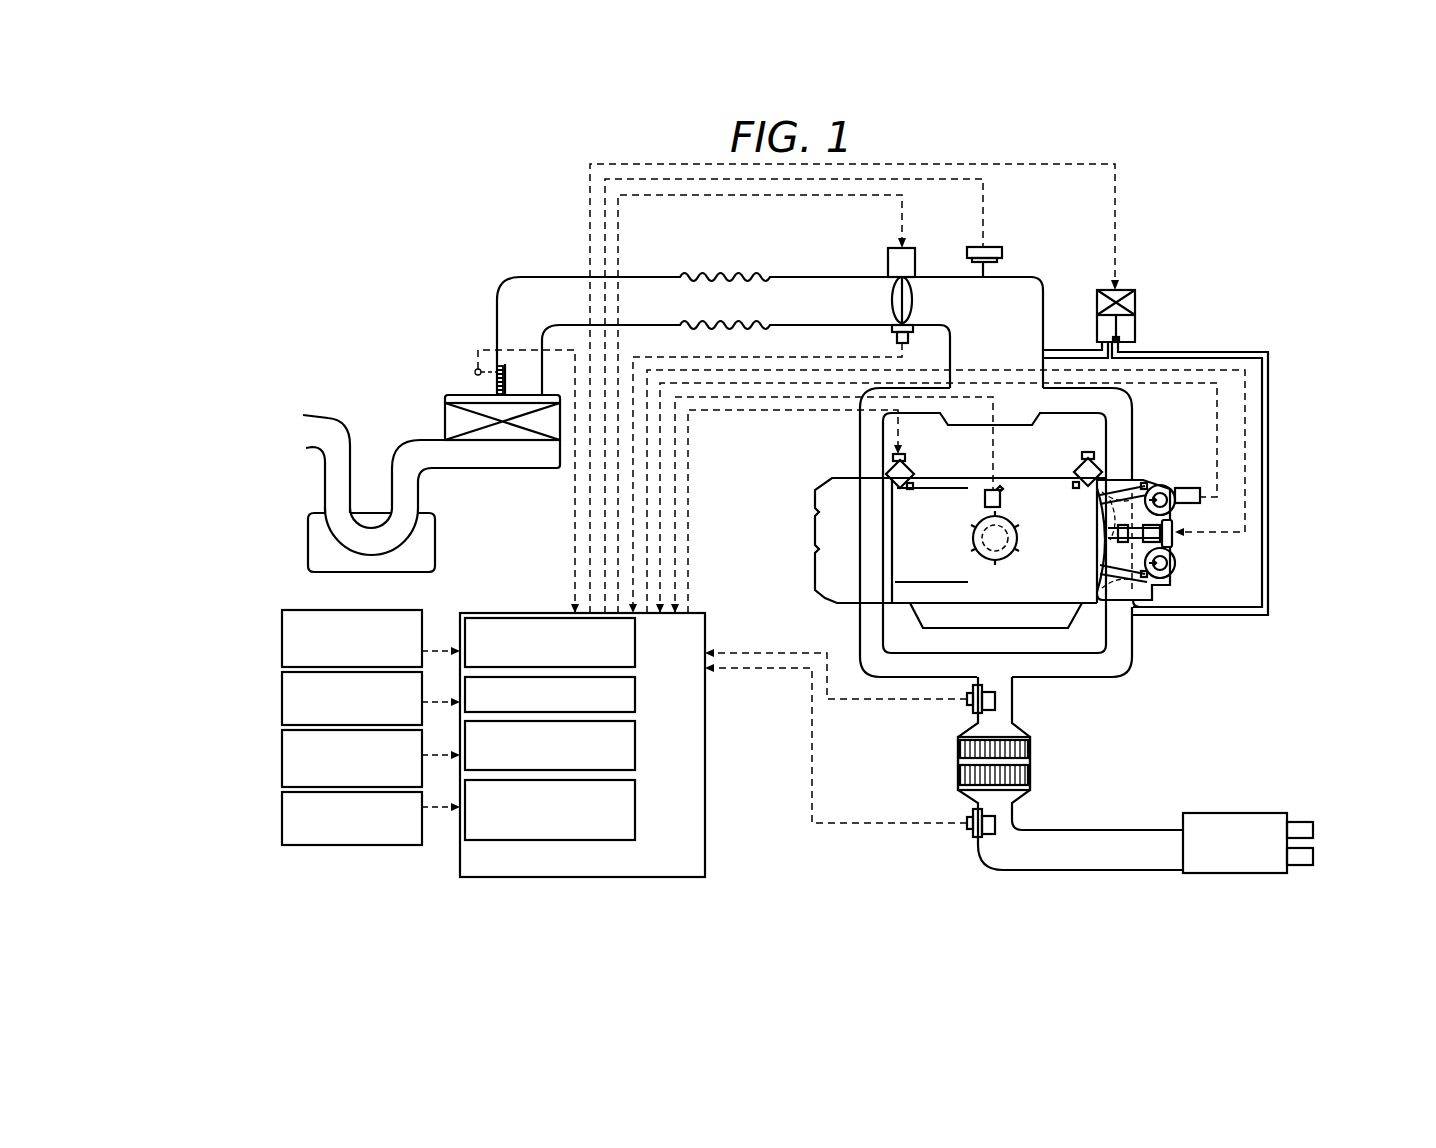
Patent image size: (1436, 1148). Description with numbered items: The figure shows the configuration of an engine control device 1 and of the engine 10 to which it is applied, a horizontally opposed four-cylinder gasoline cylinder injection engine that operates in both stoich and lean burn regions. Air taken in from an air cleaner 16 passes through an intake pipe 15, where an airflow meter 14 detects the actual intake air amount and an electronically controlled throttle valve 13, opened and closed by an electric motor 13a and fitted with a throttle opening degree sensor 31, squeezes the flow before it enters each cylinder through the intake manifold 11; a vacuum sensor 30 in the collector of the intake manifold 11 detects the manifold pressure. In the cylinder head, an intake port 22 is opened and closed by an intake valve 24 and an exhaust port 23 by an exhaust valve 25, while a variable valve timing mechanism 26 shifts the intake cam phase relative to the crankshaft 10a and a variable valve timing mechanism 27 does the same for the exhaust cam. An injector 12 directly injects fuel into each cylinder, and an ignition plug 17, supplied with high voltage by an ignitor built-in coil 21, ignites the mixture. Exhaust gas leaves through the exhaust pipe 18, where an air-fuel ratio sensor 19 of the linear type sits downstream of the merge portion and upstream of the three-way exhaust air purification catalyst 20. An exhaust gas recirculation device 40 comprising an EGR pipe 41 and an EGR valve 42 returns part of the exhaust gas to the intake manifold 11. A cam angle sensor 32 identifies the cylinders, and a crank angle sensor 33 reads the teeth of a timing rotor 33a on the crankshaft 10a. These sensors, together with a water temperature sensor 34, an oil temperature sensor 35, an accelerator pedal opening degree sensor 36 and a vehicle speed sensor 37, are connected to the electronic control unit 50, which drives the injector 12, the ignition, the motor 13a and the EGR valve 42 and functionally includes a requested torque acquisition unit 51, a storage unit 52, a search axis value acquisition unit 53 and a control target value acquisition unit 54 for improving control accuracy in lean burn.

The engine control device 1 is at (742, 545).
The engine 10 is at (1008, 593).
The crankshaft 10a is at (975, 550).
The intake manifold 11 is at (858, 449).
The injector 12 is at (906, 465).
The electronically controlled throttle valve 13 is at (892, 295).
The electric motor 13a is at (888, 258).
The airflow meter 14 is at (475, 373).
The intake pipe 15 is at (790, 276).
The air cleaner 16 is at (443, 419).
The ignition plug 17 is at (1103, 542).
The exhaust pipe 18 is at (865, 644).
The air-fuel ratio sensor 19 is at (964, 707).
The exhaust air purification catalyst 20 is at (1033, 769).
The ignitor built-in coil 21 is at (1180, 539).
The intake port 22 is at (1094, 480).
The exhaust port 23 is at (1146, 594).
The intake valve 24 is at (1101, 533).
The exhaust valve 25 is at (1094, 572).
The variable valve timing mechanism 26 is at (1158, 486).
The variable valve timing mechanism 27 is at (1177, 568).
The vacuum sensor 30 is at (1003, 255).
The throttle opening degree sensor 31 is at (892, 337).
The cam angle sensor 32 is at (1186, 486).
The crank angle sensor 33 is at (985, 498).
The timing rotor 33a is at (971, 534).
The water temperature sensor 34 is at (282, 652).
The oil temperature sensor 35 is at (282, 704).
The accelerator pedal opening degree sensor 36 is at (282, 757).
The vehicle speed sensor 37 is at (282, 808).
The exhaust gas recirculation device 40 is at (1258, 342).
The EGR pipe 41 is at (1270, 437).
The EGR valve 42 is at (1137, 322).
The electronic control unit 50 is at (707, 781).
The requested torque acquisition unit 51 is at (637, 652).
The storage unit 52 is at (637, 696).
The search axis value acquisition unit 53 is at (637, 746).
The control target value acquisition unit 54 is at (637, 798).